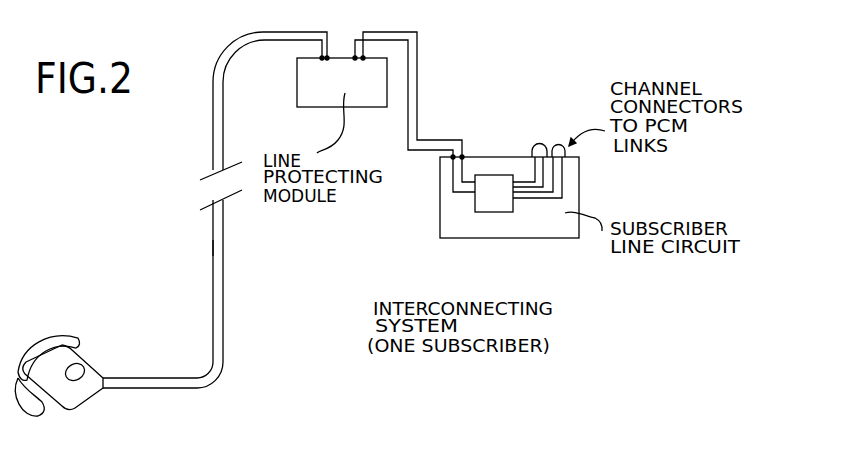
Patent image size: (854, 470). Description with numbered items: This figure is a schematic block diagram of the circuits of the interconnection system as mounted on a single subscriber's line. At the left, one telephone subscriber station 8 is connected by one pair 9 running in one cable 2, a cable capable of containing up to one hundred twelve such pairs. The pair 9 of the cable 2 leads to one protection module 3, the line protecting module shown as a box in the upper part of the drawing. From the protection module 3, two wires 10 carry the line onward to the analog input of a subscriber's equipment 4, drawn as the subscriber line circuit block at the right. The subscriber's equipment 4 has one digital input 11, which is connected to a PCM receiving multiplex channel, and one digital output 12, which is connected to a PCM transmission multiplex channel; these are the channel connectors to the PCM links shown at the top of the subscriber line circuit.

The cable 2 is at (236, 258).
The protection module 3 is at (315, 98).
The subscriber's equipment 4 is at (443, 217).
The telephone subscriber station 8 is at (78, 398).
The pair 9 is at (219, 248).
The wires 10 is at (422, 148).
The digital input 11 is at (539, 146).
The digital output 12 is at (562, 146).